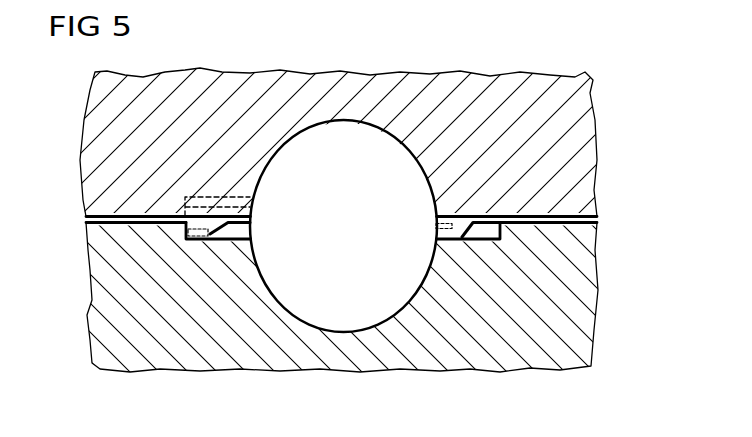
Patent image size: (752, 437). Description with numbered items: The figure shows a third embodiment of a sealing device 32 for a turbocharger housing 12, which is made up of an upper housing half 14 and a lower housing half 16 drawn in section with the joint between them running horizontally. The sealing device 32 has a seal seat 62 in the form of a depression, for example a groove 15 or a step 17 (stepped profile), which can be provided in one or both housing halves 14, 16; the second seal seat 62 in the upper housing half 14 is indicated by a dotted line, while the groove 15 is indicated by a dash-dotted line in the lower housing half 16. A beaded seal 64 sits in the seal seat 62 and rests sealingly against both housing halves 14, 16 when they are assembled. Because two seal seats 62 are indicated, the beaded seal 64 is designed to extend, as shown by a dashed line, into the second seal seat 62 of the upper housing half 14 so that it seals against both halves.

The turbocharger housing 12 is at (372, 219).
The upper housing half 14 is at (588, 133).
The groove 15 is at (424, 227).
The lower housing half 16 is at (587, 306).
The step 17 is at (182, 227).
The sealing device 32 is at (247, 235).
The seal seat 62 is at (208, 205).
The beaded seal 64 is at (220, 243).